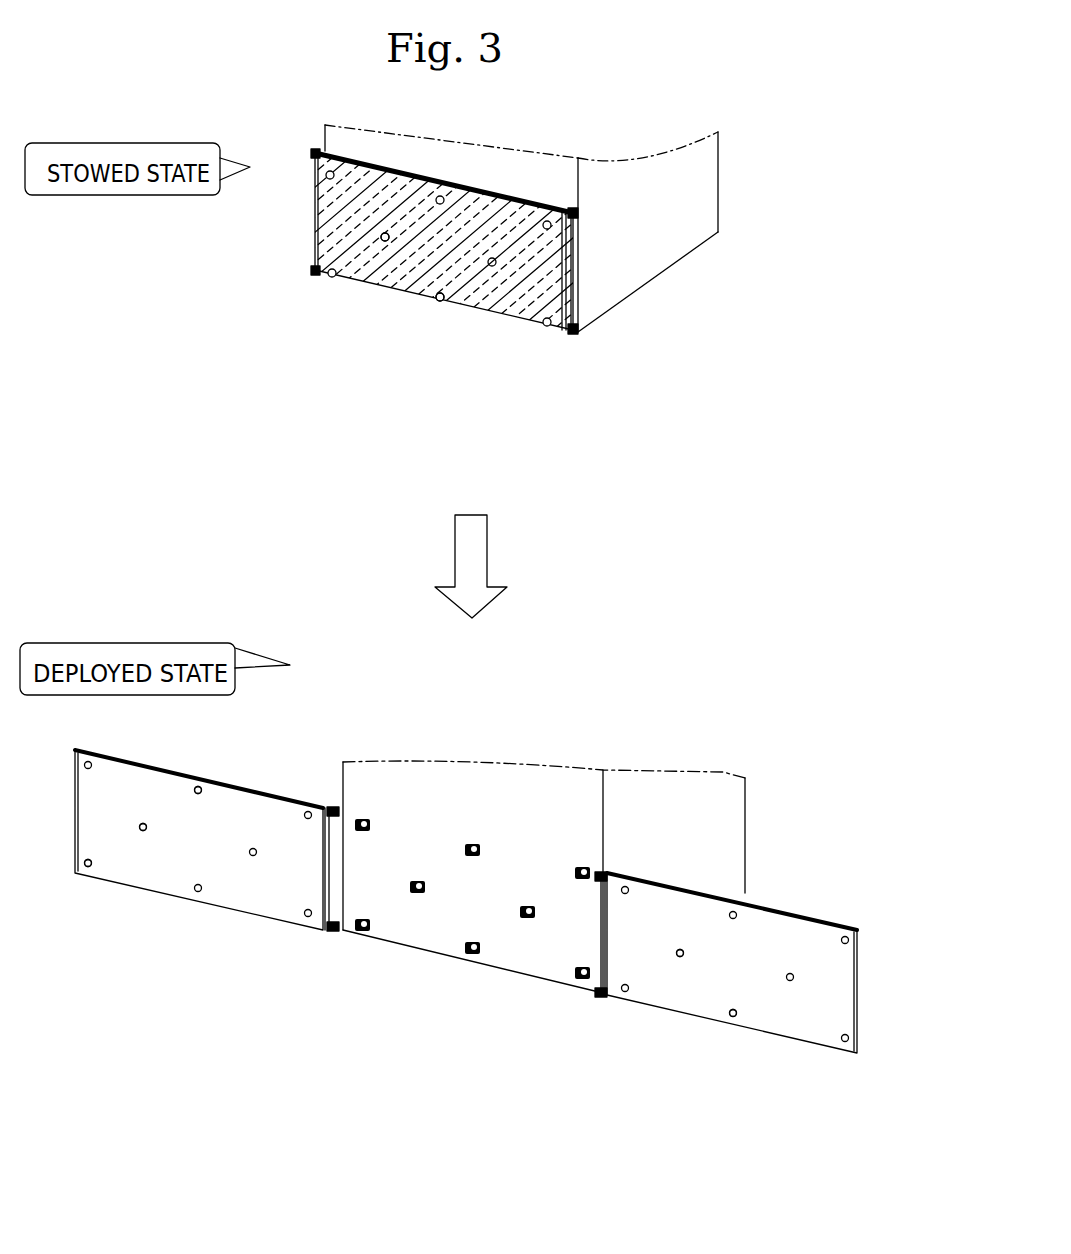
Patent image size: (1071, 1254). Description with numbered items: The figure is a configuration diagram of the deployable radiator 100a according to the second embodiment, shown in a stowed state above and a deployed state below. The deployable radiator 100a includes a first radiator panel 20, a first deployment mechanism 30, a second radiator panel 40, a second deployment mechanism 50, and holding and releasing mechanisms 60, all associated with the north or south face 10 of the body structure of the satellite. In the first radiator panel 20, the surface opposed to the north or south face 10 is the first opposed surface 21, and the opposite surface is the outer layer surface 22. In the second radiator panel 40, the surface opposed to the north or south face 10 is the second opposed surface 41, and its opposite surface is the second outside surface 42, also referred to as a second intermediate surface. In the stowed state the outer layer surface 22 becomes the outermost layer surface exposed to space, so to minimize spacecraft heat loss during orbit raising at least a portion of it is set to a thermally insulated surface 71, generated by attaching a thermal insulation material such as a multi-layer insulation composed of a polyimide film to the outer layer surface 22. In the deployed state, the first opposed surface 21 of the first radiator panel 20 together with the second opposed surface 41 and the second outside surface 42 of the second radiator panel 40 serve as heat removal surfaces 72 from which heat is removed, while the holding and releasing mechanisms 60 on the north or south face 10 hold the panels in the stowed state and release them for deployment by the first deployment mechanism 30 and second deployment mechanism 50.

The deployable radiator 100a is at (541, 124).
The north or south face of the body structure of the satellite 10 is at (543, 177).
The first radiator panel 20 is at (521, 315).
The first opposed surface 21 is at (697, 965).
The outer layer surface 22 is at (435, 274).
The first deployment mechanism 30 is at (577, 217).
The second radiator panel 40 is at (302, 887).
The second opposed surface 41 is at (113, 868).
The second outside surface 42 is at (203, 833).
The second deployment mechanism 50 is at (312, 158).
The holding and releasing mechanisms 60 is at (490, 266).
The thermally insulated surface 71 is at (833, 874).
The heat removal surfaces 72 is at (142, 810).